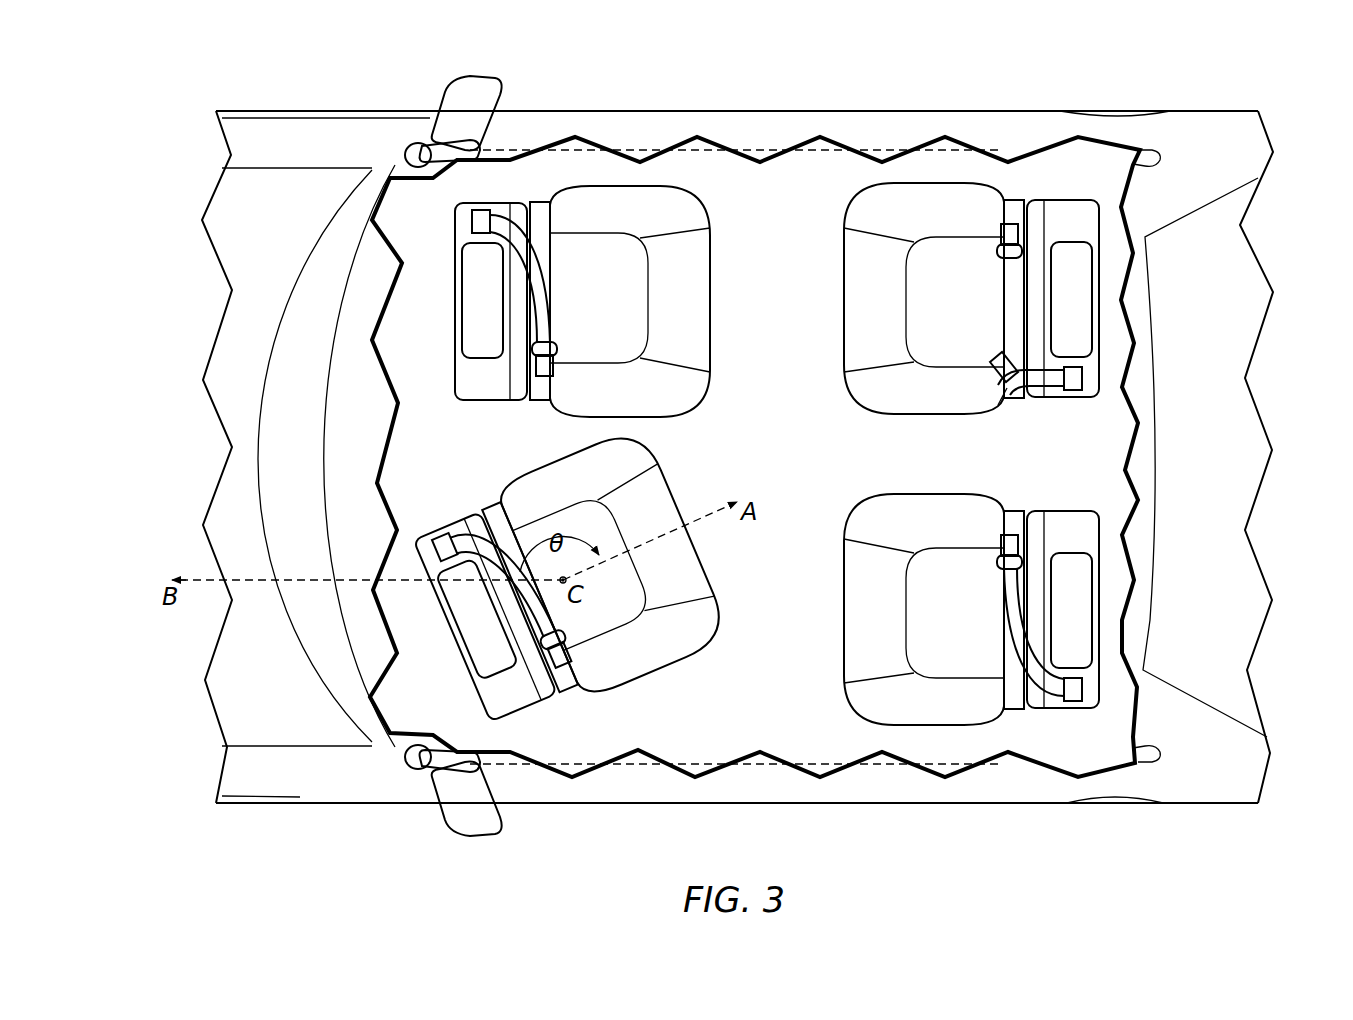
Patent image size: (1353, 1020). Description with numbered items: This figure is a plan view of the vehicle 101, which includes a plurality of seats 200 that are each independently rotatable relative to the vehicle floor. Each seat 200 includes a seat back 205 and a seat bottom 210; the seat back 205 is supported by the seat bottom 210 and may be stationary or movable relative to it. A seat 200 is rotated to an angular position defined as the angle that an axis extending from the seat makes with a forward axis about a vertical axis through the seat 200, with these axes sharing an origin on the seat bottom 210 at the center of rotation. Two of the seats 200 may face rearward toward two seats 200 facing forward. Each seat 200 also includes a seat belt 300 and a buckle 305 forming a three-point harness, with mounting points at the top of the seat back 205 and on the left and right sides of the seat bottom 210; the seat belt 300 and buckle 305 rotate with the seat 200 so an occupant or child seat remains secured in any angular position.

The vehicle 101 is at (410, 78).
The seat 200 is at (807, 457).
The seat back 205 is at (470, 372).
The seat bottom 210 is at (680, 215).
The seat belt 300 is at (517, 236).
The buckle 305 is at (558, 358).